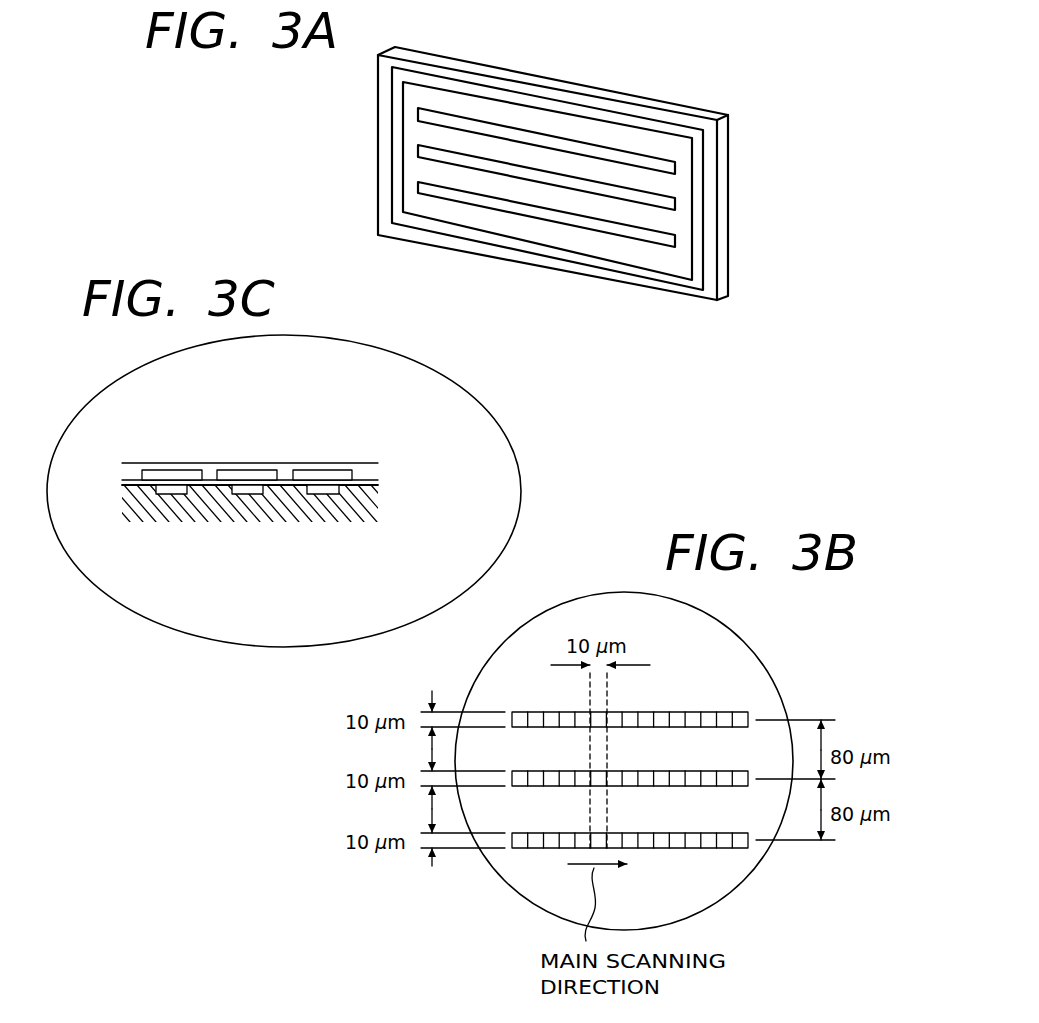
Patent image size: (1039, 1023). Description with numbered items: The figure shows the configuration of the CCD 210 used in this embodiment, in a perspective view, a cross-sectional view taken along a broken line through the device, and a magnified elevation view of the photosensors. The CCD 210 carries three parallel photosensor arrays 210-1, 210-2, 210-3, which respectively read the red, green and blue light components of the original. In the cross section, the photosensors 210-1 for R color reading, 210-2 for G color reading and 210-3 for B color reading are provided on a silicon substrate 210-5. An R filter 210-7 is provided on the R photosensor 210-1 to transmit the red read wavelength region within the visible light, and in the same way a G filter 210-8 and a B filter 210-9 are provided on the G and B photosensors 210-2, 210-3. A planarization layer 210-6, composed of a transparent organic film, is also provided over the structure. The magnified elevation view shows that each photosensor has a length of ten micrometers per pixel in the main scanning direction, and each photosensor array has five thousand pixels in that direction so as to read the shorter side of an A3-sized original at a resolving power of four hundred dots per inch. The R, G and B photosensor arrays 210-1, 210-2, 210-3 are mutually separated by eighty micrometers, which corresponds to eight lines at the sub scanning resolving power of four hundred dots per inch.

In FIG. 3A, the CCD 210 is at (668, 111).
In FIG. 3A, the R photosensor array 210-1 is at (675, 167).
In FIG. 3C, the R photosensor array 210-1 is at (172, 494).
In FIG. 3B, the R photosensor array 210-1 is at (655, 712).
In FIG. 3A, the G photosensor array 210-2 is at (675, 204).
In FIG. 3C, the G photosensor array 210-2 is at (248, 494).
In FIG. 3B, the G photosensor array 210-2 is at (655, 771).
In FIG. 3A, the B photosensor array 210-3 is at (675, 241).
In FIG. 3C, the B photosensor array 210-3 is at (324, 494).
In FIG. 3B, the B photosensor array 210-3 is at (655, 833).
In FIG. 3C, the silicon substrate 210-5 is at (373, 507).
In FIG. 3C, the planarization layer 210-6 is at (373, 472).
In FIG. 3C, the R filter 210-7 is at (172, 470).
In FIG. 3C, the G filter 210-8 is at (248, 470).
In FIG. 3C, the B filter 210-9 is at (324, 470).